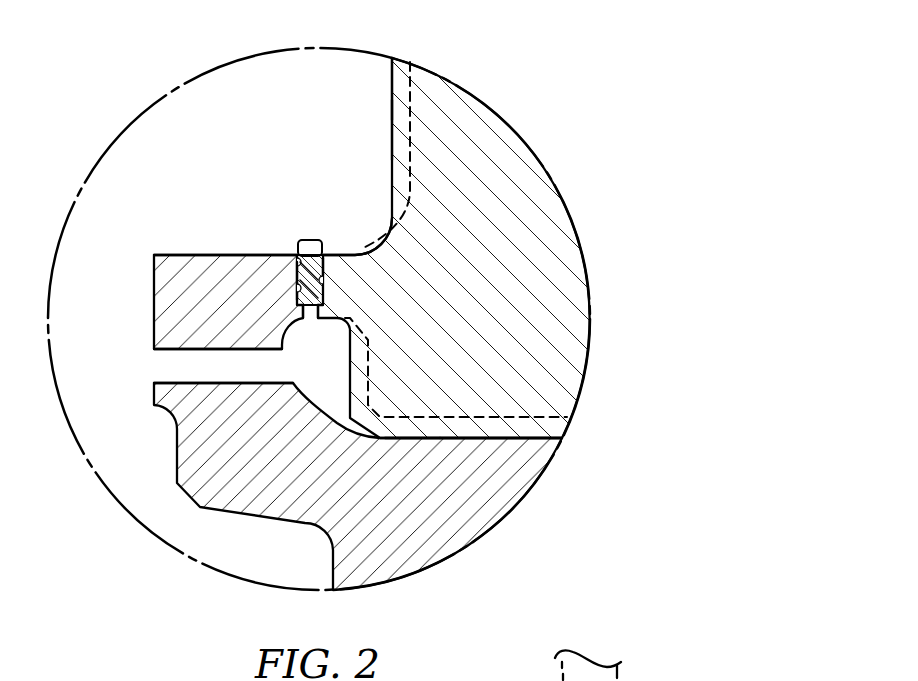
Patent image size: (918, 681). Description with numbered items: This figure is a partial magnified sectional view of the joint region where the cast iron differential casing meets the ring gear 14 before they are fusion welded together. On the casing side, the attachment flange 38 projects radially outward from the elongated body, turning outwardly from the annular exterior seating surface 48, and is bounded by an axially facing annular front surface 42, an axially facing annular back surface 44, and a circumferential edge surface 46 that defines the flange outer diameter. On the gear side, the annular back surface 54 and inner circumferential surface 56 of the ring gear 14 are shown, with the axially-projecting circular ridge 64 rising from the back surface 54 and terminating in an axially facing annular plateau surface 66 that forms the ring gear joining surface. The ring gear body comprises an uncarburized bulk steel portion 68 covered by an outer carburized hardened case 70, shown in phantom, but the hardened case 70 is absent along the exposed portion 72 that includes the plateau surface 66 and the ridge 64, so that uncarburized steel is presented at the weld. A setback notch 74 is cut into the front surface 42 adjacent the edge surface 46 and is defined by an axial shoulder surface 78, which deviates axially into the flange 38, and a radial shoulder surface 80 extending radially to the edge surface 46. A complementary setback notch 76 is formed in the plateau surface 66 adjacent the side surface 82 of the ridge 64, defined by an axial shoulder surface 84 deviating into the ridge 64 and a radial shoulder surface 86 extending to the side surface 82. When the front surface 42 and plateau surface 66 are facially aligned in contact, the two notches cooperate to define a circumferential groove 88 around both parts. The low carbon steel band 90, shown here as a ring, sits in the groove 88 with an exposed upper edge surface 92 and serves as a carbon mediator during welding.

The ring gear 14 is at (492, 131).
The attachment flange 38 is at (158, 429).
The axially facing annular front surface 42 is at (297, 288).
The axially facing annular back surface 44 is at (153, 305).
The circumferential edge surface 46 is at (185, 255).
The annular exterior seating surface 48 is at (477, 439).
The annular back surface 54 is at (392, 112).
The inner circumferential surface 56 is at (503, 440).
The axially-projecting circular ridge 64 is at (323, 268).
The axially facing annular plateau surface 66 is at (323, 285).
The uncarburized bulk steel portion 68 is at (455, 112).
The outer carburized hardened case 70 is at (390, 78).
The exposed portion 72 is at (321, 241).
The setback notch 74 is at (297, 258).
The setback notch 76 is at (313, 240).
The axial shoulder surface 78 is at (309, 293).
The radial shoulder surface 80 is at (297, 272).
The side surface 82 is at (324, 250).
The axial shoulder surface 84 is at (318, 320).
The radial shoulder surface 86 is at (338, 250).
The circumferential groove 88 is at (305, 240).
The low carbon steel band 90 is at (283, 366).
The exposed upper edge surface 92 is at (300, 242).